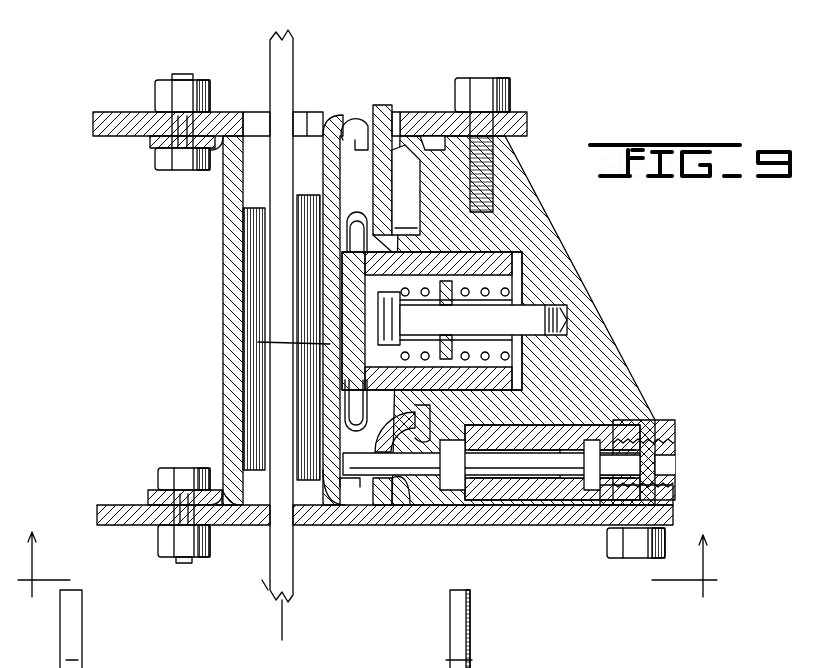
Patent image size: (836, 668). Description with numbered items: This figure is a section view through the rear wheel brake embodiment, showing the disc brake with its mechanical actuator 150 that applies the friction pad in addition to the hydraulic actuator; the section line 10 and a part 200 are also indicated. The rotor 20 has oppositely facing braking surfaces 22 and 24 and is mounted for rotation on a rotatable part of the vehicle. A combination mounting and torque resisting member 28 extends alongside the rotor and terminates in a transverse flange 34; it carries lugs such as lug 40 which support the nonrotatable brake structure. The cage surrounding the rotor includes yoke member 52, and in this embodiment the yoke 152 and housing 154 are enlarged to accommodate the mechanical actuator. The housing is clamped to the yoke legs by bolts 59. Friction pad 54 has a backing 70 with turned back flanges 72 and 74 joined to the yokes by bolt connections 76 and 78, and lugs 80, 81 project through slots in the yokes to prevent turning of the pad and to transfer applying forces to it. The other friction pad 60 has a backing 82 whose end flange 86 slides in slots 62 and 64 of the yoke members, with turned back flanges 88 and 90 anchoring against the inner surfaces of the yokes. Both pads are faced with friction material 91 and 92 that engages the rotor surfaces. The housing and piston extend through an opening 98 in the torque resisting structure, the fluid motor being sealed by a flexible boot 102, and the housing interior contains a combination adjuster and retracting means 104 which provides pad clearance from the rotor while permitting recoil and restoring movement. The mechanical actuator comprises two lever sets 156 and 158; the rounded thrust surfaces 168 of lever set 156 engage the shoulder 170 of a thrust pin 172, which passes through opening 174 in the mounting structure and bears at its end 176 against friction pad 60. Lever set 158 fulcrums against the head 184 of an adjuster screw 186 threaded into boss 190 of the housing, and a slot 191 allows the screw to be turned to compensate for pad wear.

The section line 10 is at (367, 564).
The rotor 20 is at (280, 633).
The braking surface 22 is at (294, 594).
The braking surface 24 is at (266, 578).
The torque resisting member 28 is at (412, 442).
The transverse flange 34 is at (429, 629).
The lug 40 is at (386, 130).
The yoke member 52 is at (132, 126).
The friction pad 54 is at (230, 390).
The bolts 59 is at (481, 90).
The friction pad 60 is at (258, 342).
The slot 62 is at (516, 662).
The slot 64 is at (402, 126).
The backing 70 is at (224, 210).
The turned back flange 72 is at (152, 148).
The turned back flange 74 is at (150, 494).
The bolt connection 76 is at (162, 95).
The bolt connection 78 is at (182, 470).
The lug 80 is at (230, 527).
The lug 81 is at (230, 122).
The backing 82 is at (322, 136).
The end flange 86 is at (340, 124).
The turned back flange 88 is at (352, 525).
The turned back flange 90 is at (362, 120).
The friction material 91 is at (302, 257).
The friction material 92 is at (252, 300).
The opening 98 is at (400, 228).
The flexible boot 102 is at (357, 218).
The combination adjuster and retracting means 104 is at (562, 316).
The mechanical actuator 150 is at (701, 419).
The yoke 152 is at (505, 527).
The housing 154 is at (585, 318).
The lever set 156 is at (540, 502).
The lever set 158 is at (566, 502).
The thrust surfaces 168 is at (470, 477).
The shoulder 170 is at (448, 482).
The thrust pin 172 is at (618, 456).
The opening 174 is at (400, 478).
The end 176 is at (326, 505).
The head 184 is at (598, 436).
The adjuster screw 186 is at (690, 446).
The boss 190 is at (676, 498).
The slot 191 is at (690, 466).
The support 200 is at (96, 667).